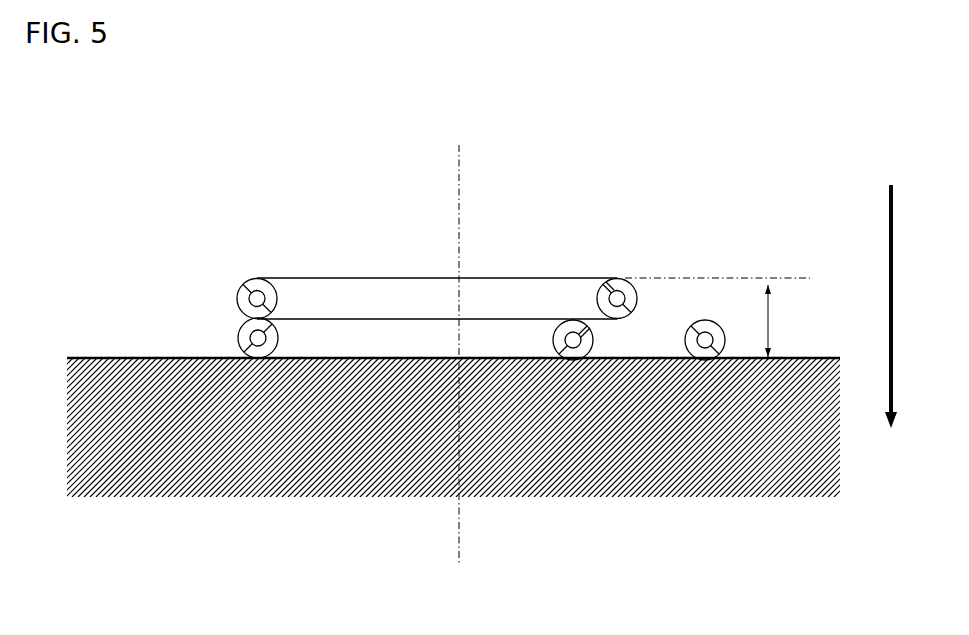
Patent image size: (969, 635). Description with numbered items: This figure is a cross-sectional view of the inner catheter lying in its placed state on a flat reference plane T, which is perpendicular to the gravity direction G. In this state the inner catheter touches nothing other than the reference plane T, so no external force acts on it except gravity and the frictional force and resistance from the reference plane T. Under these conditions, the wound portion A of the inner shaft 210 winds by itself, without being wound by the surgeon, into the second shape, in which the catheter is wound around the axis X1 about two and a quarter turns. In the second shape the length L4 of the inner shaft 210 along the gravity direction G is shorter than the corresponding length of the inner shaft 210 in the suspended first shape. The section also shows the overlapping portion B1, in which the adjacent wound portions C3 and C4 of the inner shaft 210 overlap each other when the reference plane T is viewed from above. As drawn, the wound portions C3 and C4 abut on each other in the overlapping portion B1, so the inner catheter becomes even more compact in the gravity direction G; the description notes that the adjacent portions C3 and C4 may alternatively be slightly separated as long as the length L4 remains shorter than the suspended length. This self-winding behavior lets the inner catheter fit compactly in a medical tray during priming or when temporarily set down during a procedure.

The overlapping portion B1 is at (402, 264).
The inner shaft 210 is at (398, 319).
The wound portion C3 is at (239, 289).
The wound portion C4 is at (223, 326).
The reference plane T is at (114, 358).
The wound portion A is at (553, 263).
The length L4 is at (718, 317).
The gravity direction G is at (903, 306).
The axis X1 is at (462, 531).